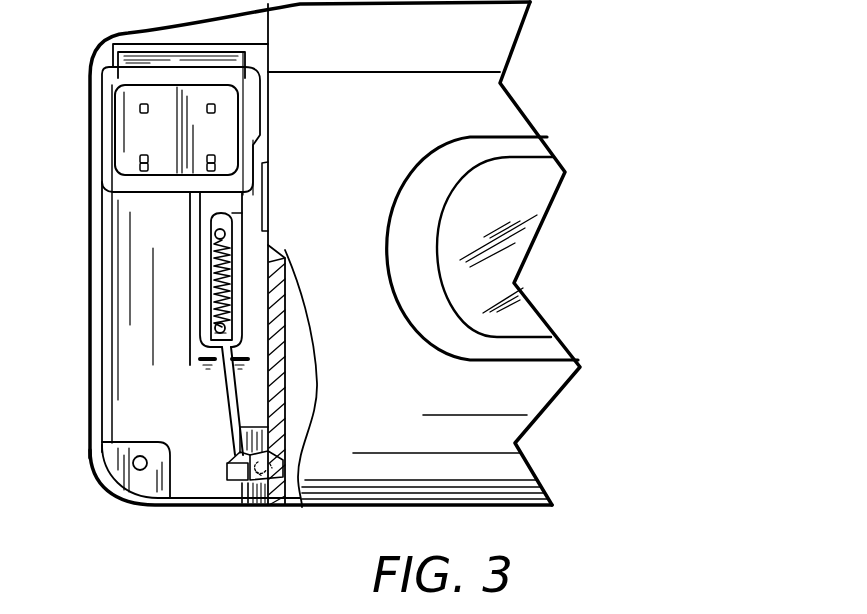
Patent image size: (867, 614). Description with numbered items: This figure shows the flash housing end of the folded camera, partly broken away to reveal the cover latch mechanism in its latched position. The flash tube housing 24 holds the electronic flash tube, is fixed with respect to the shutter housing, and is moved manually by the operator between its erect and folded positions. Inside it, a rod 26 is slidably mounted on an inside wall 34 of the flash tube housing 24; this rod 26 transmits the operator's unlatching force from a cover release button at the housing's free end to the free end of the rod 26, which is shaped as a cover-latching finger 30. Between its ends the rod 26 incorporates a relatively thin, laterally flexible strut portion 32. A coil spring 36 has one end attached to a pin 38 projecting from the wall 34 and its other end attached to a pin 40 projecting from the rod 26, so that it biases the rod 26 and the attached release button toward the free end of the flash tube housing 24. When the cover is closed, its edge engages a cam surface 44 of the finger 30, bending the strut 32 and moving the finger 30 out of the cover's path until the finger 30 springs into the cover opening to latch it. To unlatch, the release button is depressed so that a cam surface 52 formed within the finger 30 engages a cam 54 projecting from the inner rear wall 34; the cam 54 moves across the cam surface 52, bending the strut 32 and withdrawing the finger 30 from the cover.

The flash tube housing 24 is at (89, 293).
The rod 26 is at (204, 216).
The cover-latching finger 30 is at (277, 451).
The strut portion 32 is at (226, 413).
The inside wall 34 is at (145, 369).
The coil spring 36 is at (212, 272).
The pin 38 is at (216, 234).
The pin 40 is at (216, 329).
The cam surface 44 is at (272, 468).
The cam surface 52 is at (238, 457).
The cam 54 is at (248, 508).